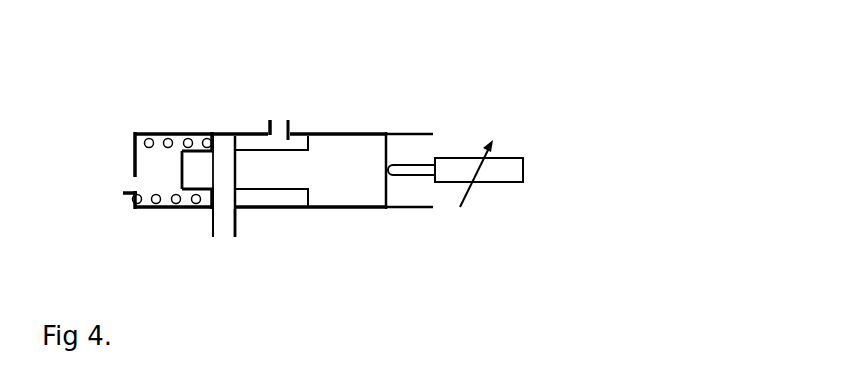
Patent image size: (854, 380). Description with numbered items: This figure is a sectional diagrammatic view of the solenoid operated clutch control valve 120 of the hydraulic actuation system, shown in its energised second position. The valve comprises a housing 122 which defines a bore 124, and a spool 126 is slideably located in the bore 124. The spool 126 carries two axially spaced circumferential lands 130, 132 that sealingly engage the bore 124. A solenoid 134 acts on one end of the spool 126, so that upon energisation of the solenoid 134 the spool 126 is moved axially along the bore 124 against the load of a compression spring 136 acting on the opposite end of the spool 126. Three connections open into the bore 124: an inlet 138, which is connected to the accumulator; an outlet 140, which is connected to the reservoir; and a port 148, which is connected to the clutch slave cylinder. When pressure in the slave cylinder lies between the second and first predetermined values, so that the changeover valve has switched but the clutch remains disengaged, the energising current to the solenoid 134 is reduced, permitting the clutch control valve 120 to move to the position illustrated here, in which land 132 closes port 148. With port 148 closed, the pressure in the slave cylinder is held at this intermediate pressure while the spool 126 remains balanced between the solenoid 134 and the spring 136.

The clutch control valve 120 is at (415, 107).
The housing 122 is at (283, 209).
The bore 124 is at (290, 139).
The spool 126 is at (388, 153).
The land 130 is at (360, 150).
The land 132 is at (225, 147).
The solenoid 134 is at (483, 183).
The compression spring 136 is at (172, 208).
The inlet 138 is at (270, 121).
The outlet 140 is at (135, 175).
The port 148 is at (227, 234).